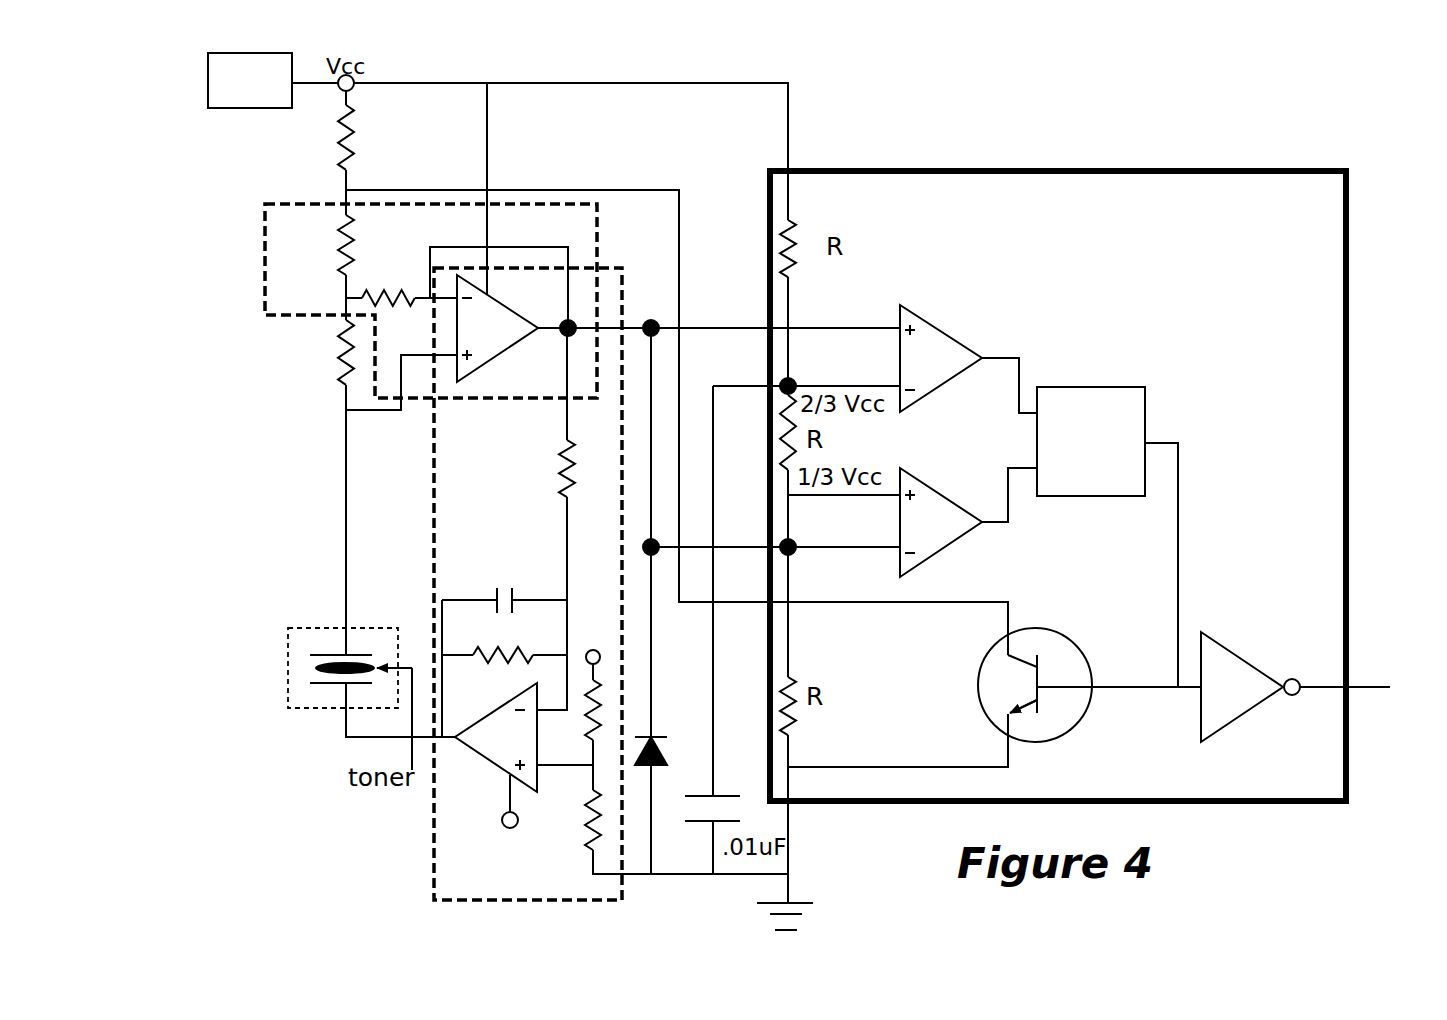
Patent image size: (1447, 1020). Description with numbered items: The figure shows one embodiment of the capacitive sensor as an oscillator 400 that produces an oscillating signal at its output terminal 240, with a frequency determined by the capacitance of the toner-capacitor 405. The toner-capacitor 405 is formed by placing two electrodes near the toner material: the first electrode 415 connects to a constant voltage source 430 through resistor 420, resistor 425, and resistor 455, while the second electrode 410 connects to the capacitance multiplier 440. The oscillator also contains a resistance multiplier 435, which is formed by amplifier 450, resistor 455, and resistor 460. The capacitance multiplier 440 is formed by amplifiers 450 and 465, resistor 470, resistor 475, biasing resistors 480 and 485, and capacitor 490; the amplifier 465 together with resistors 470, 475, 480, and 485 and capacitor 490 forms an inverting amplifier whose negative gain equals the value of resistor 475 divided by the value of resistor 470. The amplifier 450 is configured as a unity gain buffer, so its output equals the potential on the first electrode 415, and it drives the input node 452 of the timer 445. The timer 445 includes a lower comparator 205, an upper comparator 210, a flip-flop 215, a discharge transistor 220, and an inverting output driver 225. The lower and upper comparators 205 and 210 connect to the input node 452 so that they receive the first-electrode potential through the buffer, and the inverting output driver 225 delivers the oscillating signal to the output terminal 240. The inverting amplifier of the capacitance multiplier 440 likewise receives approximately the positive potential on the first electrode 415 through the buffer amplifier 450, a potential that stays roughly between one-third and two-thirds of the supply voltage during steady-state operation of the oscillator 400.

The oscillator 400 is at (1207, 142).
The toner-capacitor 405 is at (302, 620).
The second electrode 410 is at (310, 683).
The first electrode 415 is at (310, 655).
The resistor R1 420 is at (355, 140).
The resistor RT 425 is at (322, 369).
The constant voltage source 430 is at (250, 80).
The resistance multiplier 435 is at (262, 261).
The capacitance multiplier 440 is at (428, 872).
The 555-timer 445 is at (1352, 517).
The amplifier 450 is at (497, 328).
The input node 452 is at (651, 318).
The resistor R2 455 is at (322, 253).
The resistor R3 460 is at (401, 290).
The amplifier 465 is at (496, 755).
The resistor R4 470 is at (559, 474).
The resistor R5 475 is at (523, 655).
The biasing resistor 480 is at (570, 709).
The biasing resistor 485 is at (568, 830).
The capacitor 490 is at (513, 571).
The lower comparator 205 is at (968, 522).
The upper comparator 210 is at (968, 359).
The flip-flop 215 is at (1107, 537).
The discharge transistor 220 is at (1089, 685).
The inverting output driver 225 is at (1250, 687).
The output terminal 240 is at (1358, 674).